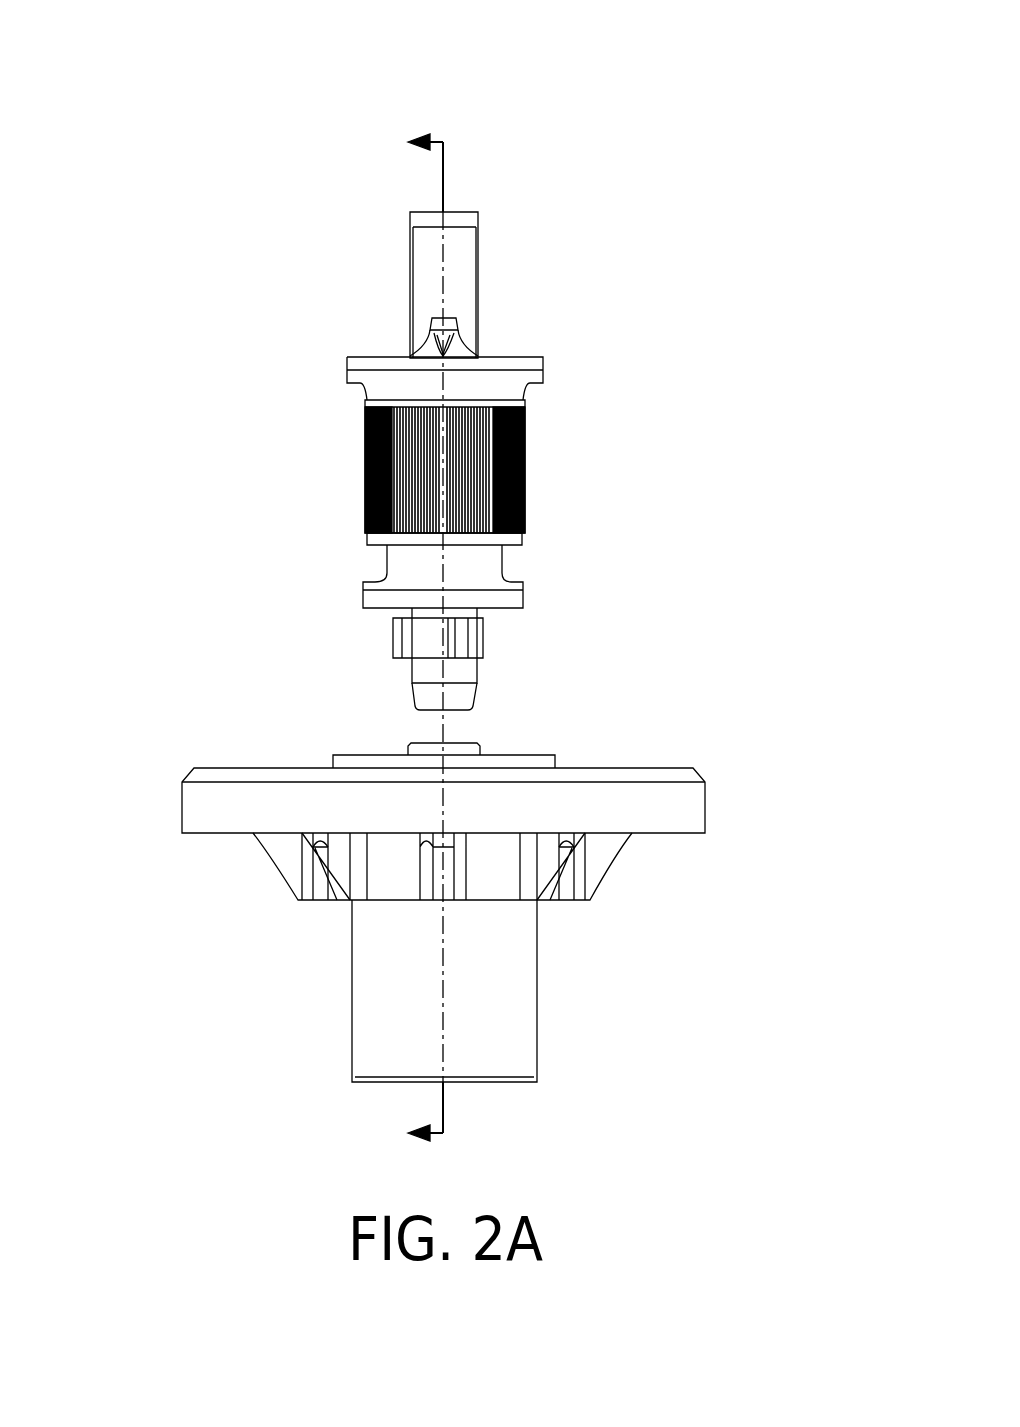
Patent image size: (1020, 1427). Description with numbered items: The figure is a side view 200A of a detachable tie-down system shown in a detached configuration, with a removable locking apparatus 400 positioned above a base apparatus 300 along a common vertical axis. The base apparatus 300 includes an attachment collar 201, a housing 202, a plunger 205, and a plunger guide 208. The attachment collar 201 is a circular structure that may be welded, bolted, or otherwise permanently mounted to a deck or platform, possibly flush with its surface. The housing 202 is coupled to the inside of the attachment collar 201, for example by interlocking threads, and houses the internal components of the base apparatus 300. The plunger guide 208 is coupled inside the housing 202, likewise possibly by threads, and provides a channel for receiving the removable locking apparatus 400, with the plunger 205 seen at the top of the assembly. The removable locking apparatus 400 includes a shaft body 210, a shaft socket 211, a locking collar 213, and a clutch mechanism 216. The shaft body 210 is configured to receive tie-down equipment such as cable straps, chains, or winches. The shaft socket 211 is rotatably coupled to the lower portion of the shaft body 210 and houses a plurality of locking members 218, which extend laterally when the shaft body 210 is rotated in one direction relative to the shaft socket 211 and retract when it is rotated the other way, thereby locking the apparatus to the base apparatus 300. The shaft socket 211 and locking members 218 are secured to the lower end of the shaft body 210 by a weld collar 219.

The side view 200A is at (541, 64).
The removable locking apparatus 400 is at (172, 208).
The base apparatus 300 is at (173, 750).
The shaft body 210 is at (410, 281).
The locking collar 213 is at (365, 440).
The clutch mechanism 216 is at (387, 550).
The locking members 218 is at (393, 636).
The shaft socket 211 is at (425, 660).
The weld collar 219 is at (478, 668).
The plunger 205 is at (470, 745).
The plunger guide 208 is at (535, 755).
The attachment collar 201 is at (662, 768).
The housing 202 is at (537, 993).